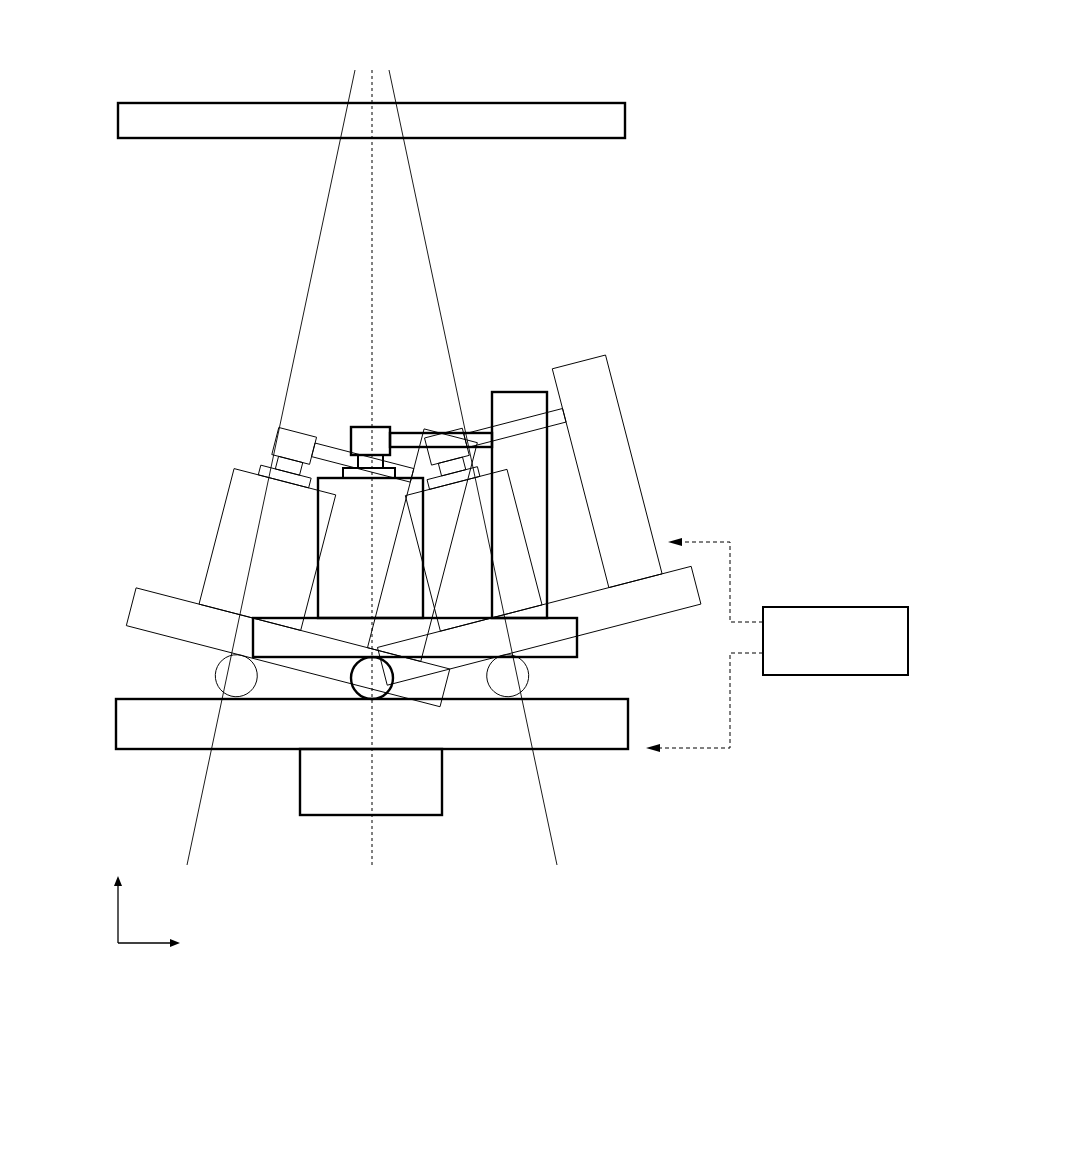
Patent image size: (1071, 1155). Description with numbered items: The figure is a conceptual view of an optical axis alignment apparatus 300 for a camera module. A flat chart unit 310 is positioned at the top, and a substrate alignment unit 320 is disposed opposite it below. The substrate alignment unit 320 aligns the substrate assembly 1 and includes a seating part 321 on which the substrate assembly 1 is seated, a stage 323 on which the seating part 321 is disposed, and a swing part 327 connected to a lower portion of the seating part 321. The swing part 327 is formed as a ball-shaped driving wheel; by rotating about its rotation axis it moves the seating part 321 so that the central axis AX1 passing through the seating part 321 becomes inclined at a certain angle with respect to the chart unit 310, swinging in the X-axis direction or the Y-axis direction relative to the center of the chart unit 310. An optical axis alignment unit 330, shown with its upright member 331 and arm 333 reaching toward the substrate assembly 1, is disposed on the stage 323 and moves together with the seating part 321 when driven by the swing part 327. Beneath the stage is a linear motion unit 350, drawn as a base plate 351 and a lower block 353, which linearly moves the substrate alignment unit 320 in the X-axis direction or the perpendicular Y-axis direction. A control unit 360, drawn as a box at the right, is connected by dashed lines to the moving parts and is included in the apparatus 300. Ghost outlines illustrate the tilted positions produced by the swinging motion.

The optical axis alignment apparatus 300 is at (701, 51).
The chart unit 310 is at (628, 121).
The substrate assembly 1 is at (340, 425).
The optical axis alignment unit 330 is at (565, 308).
The support column 331 is at (521, 398).
The support arm 333 is at (391, 428).
The substrate alignment unit 320 is at (118, 510).
The seating part 321 is at (318, 505).
The stage 323 is at (253, 620).
The swing part 327 is at (351, 680).
The linear motion unit 350 is at (302, 872).
The base plate 351 is at (263, 738).
The base block 353 is at (325, 805).
The control unit 360 is at (833, 607).
The central axis AX1 is at (372, 832).